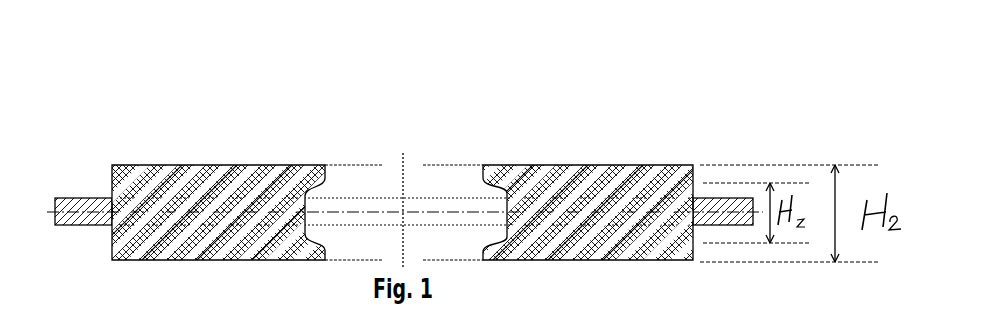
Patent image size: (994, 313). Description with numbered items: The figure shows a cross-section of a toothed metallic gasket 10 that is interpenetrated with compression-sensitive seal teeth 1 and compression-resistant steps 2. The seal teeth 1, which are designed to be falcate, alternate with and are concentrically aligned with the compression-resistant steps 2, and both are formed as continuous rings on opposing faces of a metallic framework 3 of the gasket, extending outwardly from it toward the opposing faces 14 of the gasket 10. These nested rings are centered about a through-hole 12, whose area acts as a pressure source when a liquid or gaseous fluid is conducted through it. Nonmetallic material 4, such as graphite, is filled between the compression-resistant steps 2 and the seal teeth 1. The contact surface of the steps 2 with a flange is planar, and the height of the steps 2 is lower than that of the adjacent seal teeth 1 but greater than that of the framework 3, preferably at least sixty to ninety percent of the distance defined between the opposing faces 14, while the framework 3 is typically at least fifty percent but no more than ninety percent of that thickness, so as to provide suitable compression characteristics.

The compression-sensitive seal teeth 1 is at (292, 156).
The compression-resistant steps 2 is at (198, 182).
The metallic framework 3 is at (80, 198).
The nonmetallic material 4 is at (217, 177).
The toothed metallic gasket 10 is at (468, 156).
The through-hole 12 is at (551, 43).
The opposing faces 14 is at (651, 294).